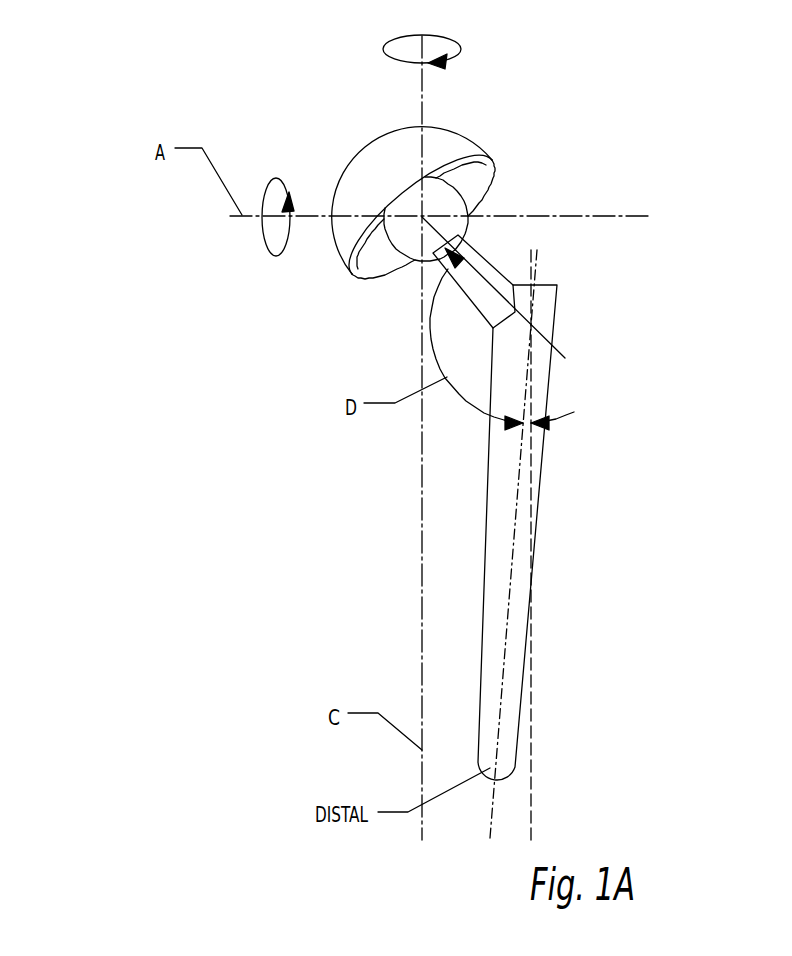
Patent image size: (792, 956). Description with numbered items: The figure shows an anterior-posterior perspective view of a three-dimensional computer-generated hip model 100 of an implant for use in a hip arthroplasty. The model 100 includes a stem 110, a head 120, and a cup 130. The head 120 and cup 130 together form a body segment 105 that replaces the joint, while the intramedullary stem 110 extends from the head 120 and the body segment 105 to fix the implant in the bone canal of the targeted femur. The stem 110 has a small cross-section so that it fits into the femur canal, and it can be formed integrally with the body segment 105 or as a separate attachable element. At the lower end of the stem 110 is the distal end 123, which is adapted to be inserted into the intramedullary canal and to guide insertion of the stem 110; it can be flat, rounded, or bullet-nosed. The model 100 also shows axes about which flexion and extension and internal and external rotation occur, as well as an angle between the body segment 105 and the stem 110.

The hip model 100 is at (680, 73).
The body segment 105 is at (457, 97).
The stem 110 is at (485, 553).
The head 120 is at (401, 264).
The distal end 123 is at (640, 733).
The cup 130 is at (367, 147).